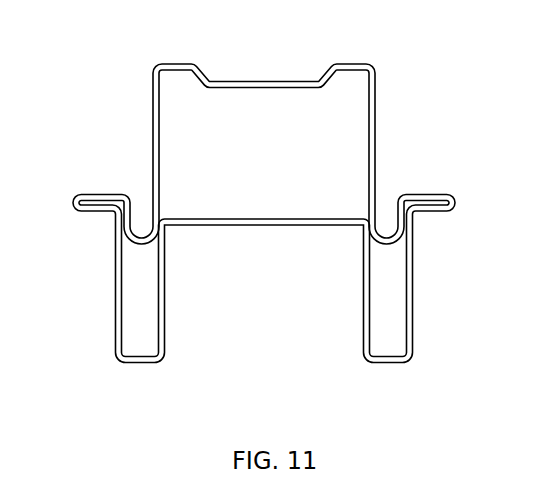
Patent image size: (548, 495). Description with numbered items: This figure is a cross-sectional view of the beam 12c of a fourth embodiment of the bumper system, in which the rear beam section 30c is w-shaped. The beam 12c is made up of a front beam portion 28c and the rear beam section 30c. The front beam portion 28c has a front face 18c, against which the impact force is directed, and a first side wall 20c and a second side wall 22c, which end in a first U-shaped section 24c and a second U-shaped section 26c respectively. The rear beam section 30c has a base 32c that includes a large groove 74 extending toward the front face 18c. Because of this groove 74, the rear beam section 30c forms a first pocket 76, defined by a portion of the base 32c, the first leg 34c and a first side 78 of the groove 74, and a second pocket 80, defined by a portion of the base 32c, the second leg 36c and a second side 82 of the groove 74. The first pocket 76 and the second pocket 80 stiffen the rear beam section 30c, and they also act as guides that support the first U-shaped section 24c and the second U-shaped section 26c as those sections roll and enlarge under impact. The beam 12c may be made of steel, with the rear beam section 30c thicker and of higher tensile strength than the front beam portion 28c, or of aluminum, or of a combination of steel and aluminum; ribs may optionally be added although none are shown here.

The beam 12c is at (106, 92).
The front face 18c is at (255, 81).
The first side wall 20c is at (160, 122).
The second side wall 22c is at (368, 122).
The front beam portion 28c is at (390, 107).
The first U-shaped section 24c is at (139, 246).
The second U-shaped section 26c is at (389, 246).
The first leg 34c is at (115, 280).
The second leg 36c is at (412, 293).
The base 32c is at (147, 364).
The rear beam section 30c is at (405, 295).
The first pocket 76 is at (165, 299).
The first side of the groove 78 is at (166, 323).
The second pocket 80 is at (399, 277).
The second side of the groove 82 is at (361, 336).
The groove 74 is at (273, 336).